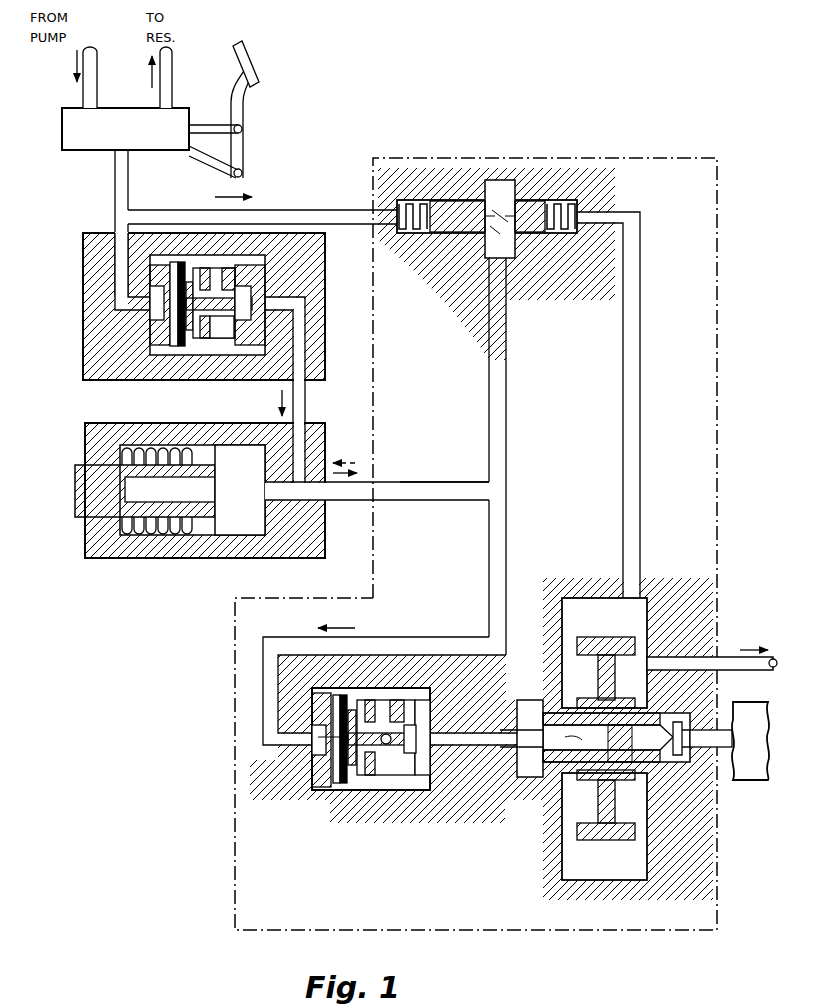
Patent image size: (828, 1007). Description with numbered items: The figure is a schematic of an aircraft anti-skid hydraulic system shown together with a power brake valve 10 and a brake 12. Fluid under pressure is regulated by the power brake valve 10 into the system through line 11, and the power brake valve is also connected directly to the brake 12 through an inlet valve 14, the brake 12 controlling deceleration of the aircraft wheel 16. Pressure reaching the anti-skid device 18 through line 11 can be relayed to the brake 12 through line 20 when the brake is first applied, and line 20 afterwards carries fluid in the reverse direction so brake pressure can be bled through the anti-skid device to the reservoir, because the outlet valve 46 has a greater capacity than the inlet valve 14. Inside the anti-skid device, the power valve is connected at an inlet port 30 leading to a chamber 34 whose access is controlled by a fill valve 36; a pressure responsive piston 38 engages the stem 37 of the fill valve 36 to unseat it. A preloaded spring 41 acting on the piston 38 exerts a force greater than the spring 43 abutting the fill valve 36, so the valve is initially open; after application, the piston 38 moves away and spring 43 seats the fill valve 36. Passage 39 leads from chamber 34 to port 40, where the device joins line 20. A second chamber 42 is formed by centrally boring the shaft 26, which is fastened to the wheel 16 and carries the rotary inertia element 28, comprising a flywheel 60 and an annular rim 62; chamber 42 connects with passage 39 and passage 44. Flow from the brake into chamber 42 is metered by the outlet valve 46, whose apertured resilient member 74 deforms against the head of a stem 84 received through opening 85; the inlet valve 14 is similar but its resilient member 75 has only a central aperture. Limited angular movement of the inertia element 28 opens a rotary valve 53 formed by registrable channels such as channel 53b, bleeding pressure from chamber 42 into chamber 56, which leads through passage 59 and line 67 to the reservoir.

The power brake valve 10 is at (76, 140).
The line 11 is at (118, 180).
The brake 12 is at (100, 546).
The inlet valve 14 is at (185, 325).
The aircraft wheel 16 is at (764, 768).
The anti-skid device 18 is at (388, 158).
The line 20 is at (348, 500).
The shaft 26 is at (674, 752).
The rotary inertia element 28 is at (578, 670).
The inlet port 30 is at (388, 214).
The chamber 34 is at (500, 190).
The fill valve 36 is at (465, 214).
The stem 37 is at (510, 242).
The pressure responsive piston 38 is at (530, 214).
The passage 39 is at (508, 370).
The port 40 is at (402, 492).
The spring 41 is at (566, 214).
The second chamber 42 is at (595, 738).
The spring 43 is at (430, 214).
The passage 44 is at (400, 640).
The outlet valve 46 is at (399, 779).
The rotary valve 53 is at (622, 764).
The registrable channel 53b is at (598, 762).
The chamber 56 is at (585, 602).
The passage 59 is at (681, 660).
The flywheel 60 is at (605, 792).
The annular rim 62 is at (597, 838).
The line 67 is at (770, 666).
The resilient member 74 is at (340, 738).
The resilient member 75 is at (190, 312).
The stem 84 is at (418, 758).
The opening 85 is at (385, 770).